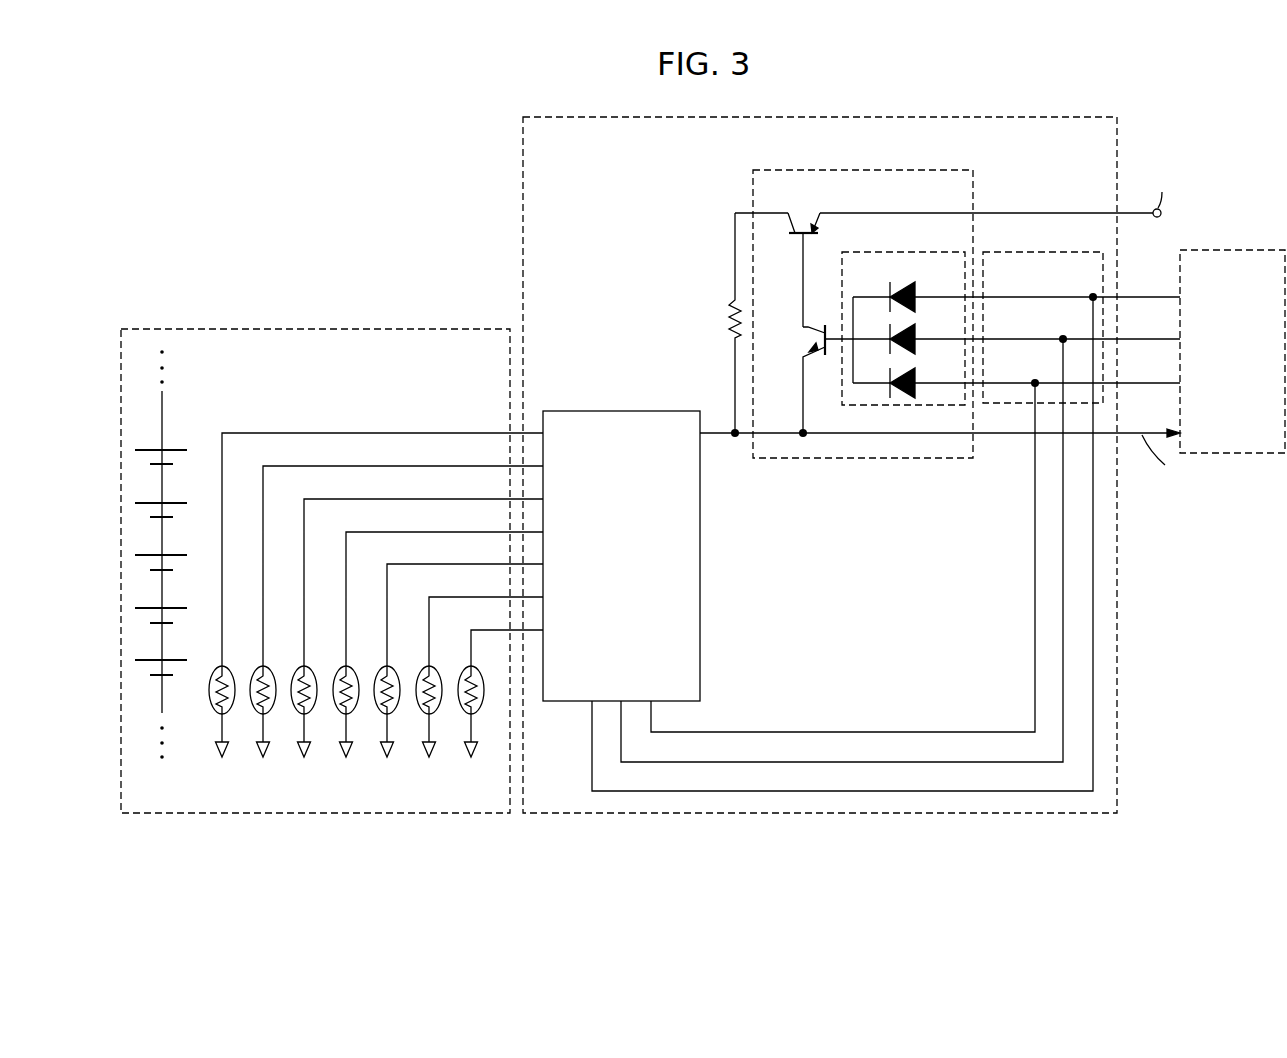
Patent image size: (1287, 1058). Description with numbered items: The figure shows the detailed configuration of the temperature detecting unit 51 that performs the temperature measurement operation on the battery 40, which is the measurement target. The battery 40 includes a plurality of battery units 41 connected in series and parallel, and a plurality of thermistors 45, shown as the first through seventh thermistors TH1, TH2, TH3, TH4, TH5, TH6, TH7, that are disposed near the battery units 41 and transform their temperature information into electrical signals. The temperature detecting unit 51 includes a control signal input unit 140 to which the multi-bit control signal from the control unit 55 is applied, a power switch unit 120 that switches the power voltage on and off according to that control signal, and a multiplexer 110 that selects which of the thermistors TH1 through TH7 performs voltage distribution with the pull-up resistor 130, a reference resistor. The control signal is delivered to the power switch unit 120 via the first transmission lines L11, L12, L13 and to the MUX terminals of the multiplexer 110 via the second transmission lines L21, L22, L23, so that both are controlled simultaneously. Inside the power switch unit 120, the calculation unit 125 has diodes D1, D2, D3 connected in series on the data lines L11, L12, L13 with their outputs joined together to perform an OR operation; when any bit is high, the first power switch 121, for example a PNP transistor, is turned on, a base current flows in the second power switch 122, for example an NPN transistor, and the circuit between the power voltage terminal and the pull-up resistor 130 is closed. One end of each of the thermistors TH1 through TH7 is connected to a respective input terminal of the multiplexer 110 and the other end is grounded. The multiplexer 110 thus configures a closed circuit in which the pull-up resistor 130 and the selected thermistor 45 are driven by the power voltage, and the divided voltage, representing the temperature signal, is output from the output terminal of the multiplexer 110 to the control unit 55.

The battery 40 is at (317, 329).
The battery unit 41 is at (178, 460).
The thermistor 45 is at (225, 696).
The temperature detecting unit 51 is at (825, 117).
The control unit 55 is at (1235, 248).
The multiplexer 110 is at (627, 408).
The power switch unit 120 is at (975, 192).
The first power switch 121 is at (806, 338).
The second power switch 122 is at (803, 214).
The calculation unit 125 is at (1011, 315).
The pull-up resistor 130 is at (725, 312).
The control signal input unit 140 is at (1044, 311).
The first thermistor TH1 is at (234, 670).
The second thermistor TH2 is at (275, 670).
The third thermistor TH3 is at (316, 670).
The fourth thermistor TH4 is at (358, 670).
The fifth thermistor TH5 is at (399, 670).
The sixth thermistor TH6 is at (441, 670).
The seventh thermistor TH7 is at (483, 670).
The diode D1 is at (917, 287).
The diode D2 is at (917, 329).
The diode D3 is at (917, 373).
The first transmission line L11 is at (995, 297).
The first transmission line L12 is at (995, 339).
The first transmission line L13 is at (995, 382).
The second transmission line L21 is at (822, 791).
The second transmission line L22 is at (864, 762).
The second transmission line L23 is at (909, 732).